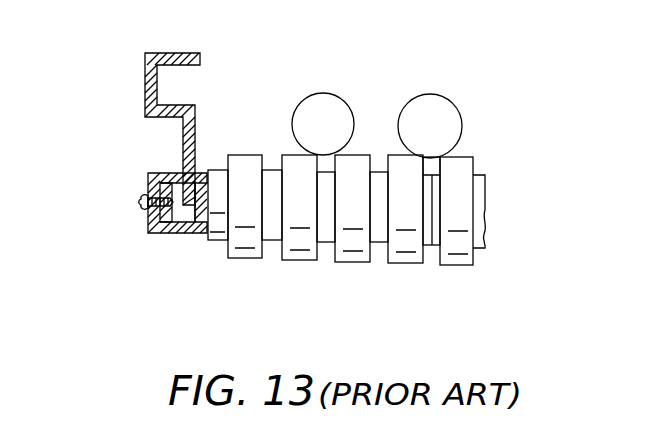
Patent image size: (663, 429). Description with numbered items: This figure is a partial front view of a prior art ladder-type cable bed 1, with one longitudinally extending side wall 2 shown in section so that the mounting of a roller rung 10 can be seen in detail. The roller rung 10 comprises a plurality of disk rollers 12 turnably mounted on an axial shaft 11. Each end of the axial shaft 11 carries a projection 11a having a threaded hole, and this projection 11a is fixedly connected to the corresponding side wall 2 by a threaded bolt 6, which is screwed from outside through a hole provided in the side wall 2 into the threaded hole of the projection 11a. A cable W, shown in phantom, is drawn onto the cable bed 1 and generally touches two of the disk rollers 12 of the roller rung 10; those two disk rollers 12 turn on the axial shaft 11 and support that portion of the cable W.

The cable bed 1 is at (146, 69).
The side wall 2 is at (146, 95).
The threaded bolt 6 is at (144, 198).
The roller rung 10 is at (478, 250).
The axial shaft 11 is at (200, 170).
The projection 11a is at (151, 212).
The disk roller 12 is at (243, 258).
The cable W is at (418, 99).